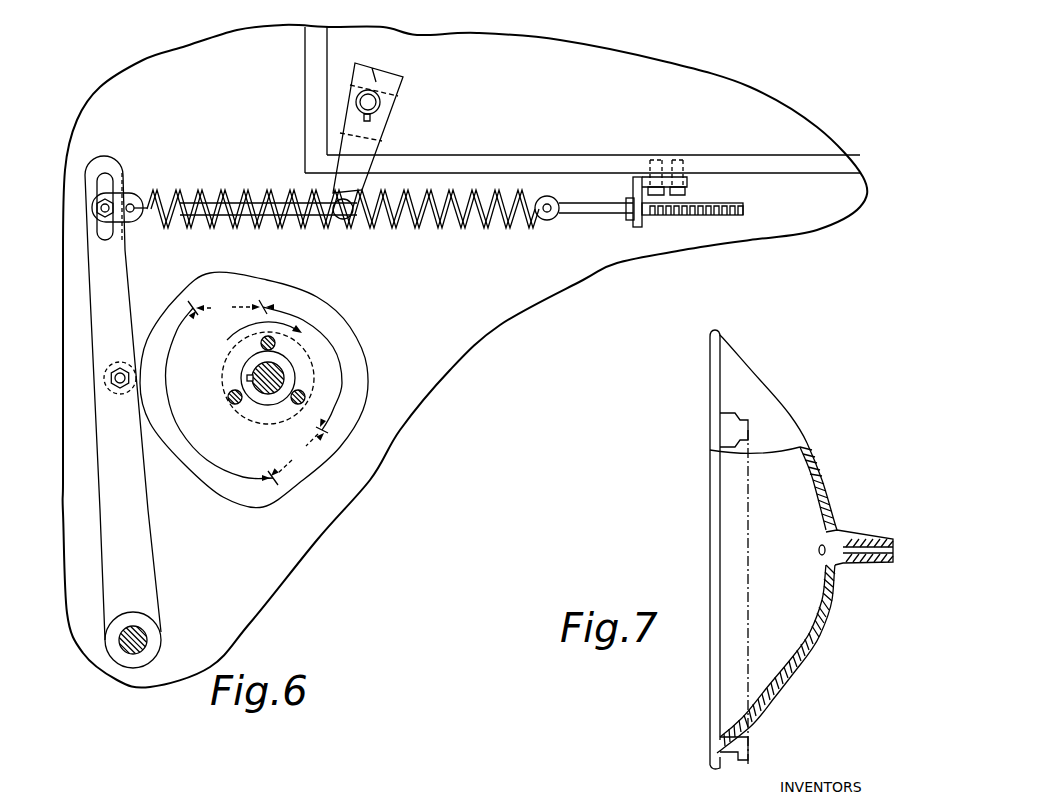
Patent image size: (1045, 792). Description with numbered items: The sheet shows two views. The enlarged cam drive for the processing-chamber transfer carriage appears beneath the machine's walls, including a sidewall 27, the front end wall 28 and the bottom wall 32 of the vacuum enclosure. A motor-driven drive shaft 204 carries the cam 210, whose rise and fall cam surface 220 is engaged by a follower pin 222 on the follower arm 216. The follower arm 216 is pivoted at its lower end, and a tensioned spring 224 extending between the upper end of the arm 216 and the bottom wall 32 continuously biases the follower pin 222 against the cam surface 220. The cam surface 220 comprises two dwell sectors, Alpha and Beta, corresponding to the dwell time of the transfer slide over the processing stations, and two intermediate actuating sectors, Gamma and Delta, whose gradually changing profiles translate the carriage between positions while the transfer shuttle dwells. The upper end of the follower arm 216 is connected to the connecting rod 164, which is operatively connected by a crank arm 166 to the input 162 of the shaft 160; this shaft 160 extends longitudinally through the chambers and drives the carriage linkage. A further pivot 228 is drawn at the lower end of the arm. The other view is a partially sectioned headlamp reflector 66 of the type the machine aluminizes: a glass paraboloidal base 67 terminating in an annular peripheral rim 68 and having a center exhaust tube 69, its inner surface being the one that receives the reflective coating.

In FIG. 6, the sidewall 27 is at (313, 85).
In FIG. 6, the front end wall 28 is at (767, 142).
In FIG. 6, the bottom wall 32 is at (810, 167).
In FIG. 6, the shaft 160 is at (375, 100).
In FIG. 6, the input 162 is at (372, 107).
In FIG. 6, the connecting rod 164 is at (203, 193).
In FIG. 6, the crank arm 166 is at (367, 148).
In FIG. 6, the drive shaft 204 is at (258, 373).
In FIG. 6, the cam 210 is at (370, 387).
In FIG. 6, the follower arm 216 is at (147, 563).
In FIG. 6, the cam surface 220 is at (297, 490).
In FIG. 6, the follower pin 222 is at (115, 393).
In FIG. 6, the tensioned spring 224 is at (417, 220).
In FIG. 6, the pivot pin 228 is at (145, 640).
In FIG. 7, the reflector 66 is at (770, 387).
In FIG. 7, the paraboloidal base 67 is at (823, 477).
In FIG. 7, the annular peripheral rim 68 is at (722, 336).
In FIG. 7, the center exhaust tube 69 is at (865, 562).